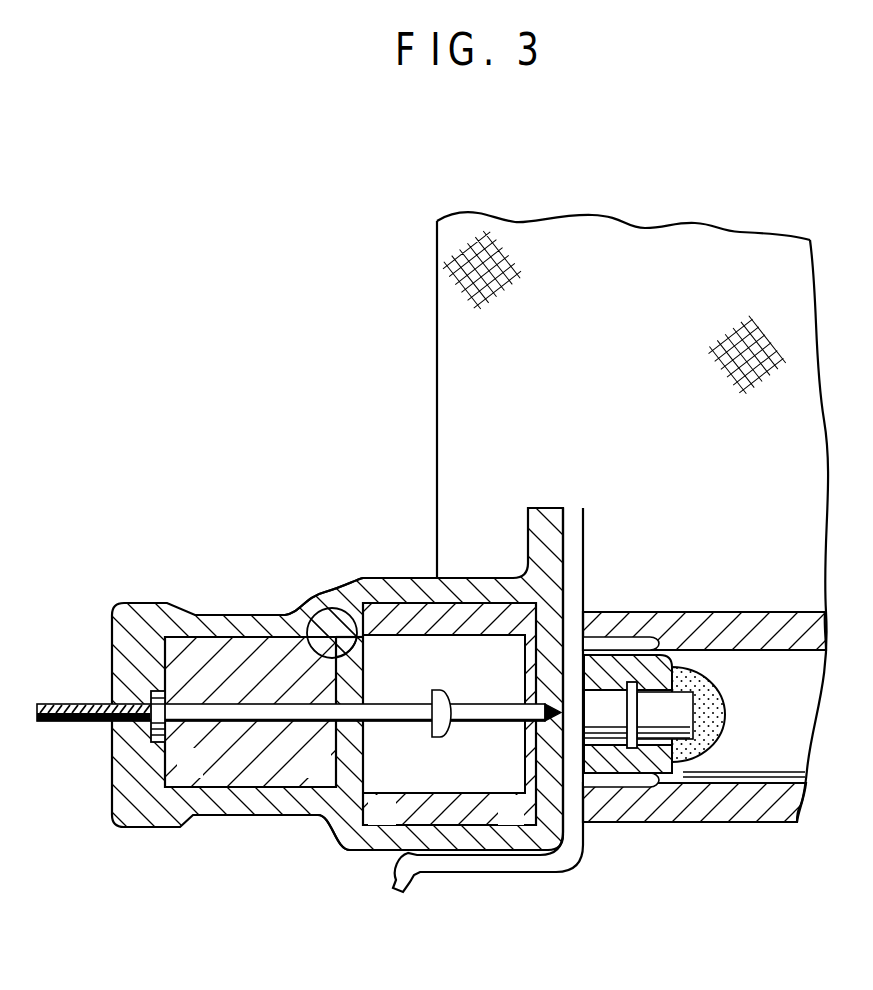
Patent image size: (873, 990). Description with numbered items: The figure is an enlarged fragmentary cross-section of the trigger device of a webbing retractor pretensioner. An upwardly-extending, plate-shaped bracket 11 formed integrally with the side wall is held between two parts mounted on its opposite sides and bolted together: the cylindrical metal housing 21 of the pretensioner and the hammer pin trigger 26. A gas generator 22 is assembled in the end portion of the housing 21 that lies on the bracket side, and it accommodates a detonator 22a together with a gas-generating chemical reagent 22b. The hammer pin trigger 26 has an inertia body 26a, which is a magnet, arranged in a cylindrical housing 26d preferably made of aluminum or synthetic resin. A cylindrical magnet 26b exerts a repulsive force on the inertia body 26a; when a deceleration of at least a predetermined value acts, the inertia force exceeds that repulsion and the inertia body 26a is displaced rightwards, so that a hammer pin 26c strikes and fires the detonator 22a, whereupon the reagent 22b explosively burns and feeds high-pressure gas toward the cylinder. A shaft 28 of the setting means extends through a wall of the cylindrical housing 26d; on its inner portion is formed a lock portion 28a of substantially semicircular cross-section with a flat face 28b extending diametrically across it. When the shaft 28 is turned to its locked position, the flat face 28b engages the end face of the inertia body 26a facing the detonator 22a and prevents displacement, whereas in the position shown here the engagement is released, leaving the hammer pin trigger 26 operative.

The bracket 11 is at (577, 508).
The housing 21 is at (673, 610).
The gas generator 22 is at (758, 688).
The detonator 22a is at (660, 715).
The gas-generating chemical reagent 22b is at (708, 742).
The hammer pin trigger 26 is at (120, 598).
The inertia body 26a is at (240, 662).
The cylindrical magnet 26b is at (450, 612).
The hammer pin 26c is at (280, 716).
The cylindrical housing 26d is at (354, 842).
The shaft 28 is at (325, 607).
The lock portion 28a is at (350, 622).
The flat face 28b is at (345, 660).